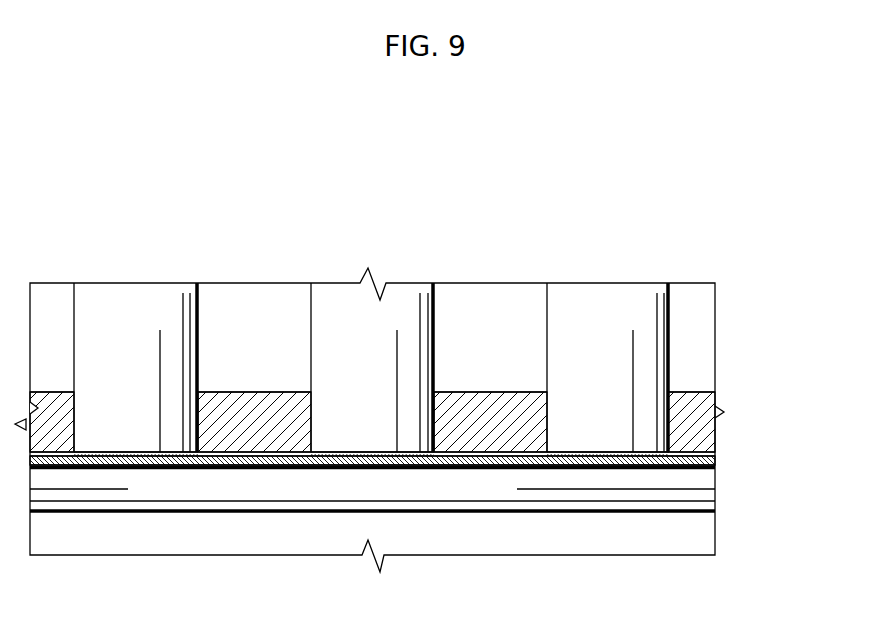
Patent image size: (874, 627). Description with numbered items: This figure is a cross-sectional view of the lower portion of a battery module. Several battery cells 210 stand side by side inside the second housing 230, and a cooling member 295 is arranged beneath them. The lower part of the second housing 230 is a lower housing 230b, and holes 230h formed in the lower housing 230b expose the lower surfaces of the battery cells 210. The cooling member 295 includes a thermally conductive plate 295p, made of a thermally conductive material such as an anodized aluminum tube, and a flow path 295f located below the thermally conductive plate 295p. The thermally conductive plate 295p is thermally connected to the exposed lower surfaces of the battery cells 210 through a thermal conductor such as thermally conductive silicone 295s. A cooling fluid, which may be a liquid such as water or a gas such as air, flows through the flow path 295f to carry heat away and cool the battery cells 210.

The battery cells 210 is at (205, 309).
The second housing 230 is at (721, 394).
The lower housing 230b is at (700, 433).
The holes 230h is at (112, 455).
The cooling member 295 is at (439, 521).
The thermally conductive plate 295p is at (713, 458).
The flow path 295f is at (703, 493).
The thermally conductive silicone 295s is at (147, 456).